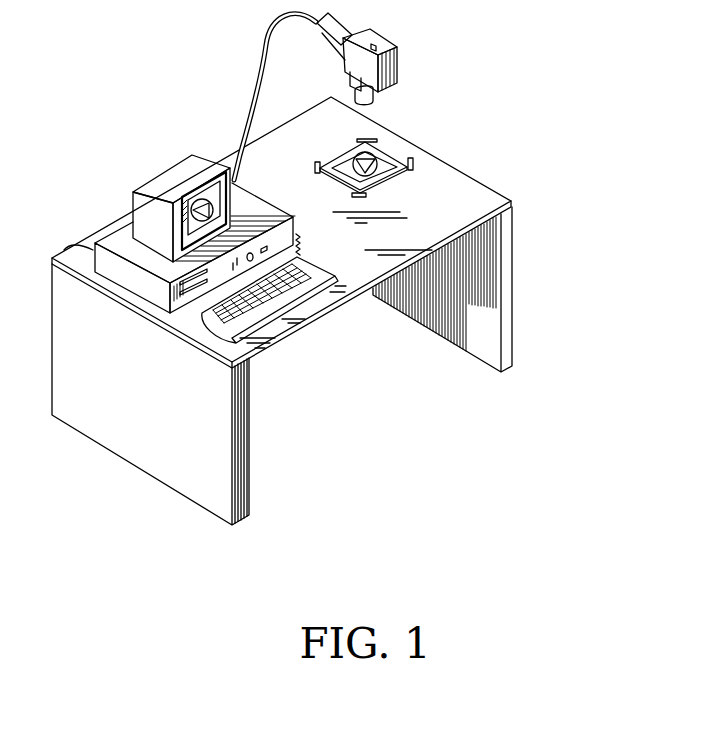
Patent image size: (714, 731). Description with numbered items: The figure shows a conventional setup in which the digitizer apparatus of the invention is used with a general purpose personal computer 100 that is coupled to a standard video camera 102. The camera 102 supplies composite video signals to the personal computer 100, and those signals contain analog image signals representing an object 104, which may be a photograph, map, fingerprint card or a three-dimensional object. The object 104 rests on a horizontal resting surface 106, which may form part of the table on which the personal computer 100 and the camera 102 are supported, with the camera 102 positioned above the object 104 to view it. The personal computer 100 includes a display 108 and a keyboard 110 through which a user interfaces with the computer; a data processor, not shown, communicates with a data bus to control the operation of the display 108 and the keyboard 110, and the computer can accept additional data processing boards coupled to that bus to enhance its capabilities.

The personal computer 100 is at (161, 80).
The video camera 102 is at (397, 60).
The object 104 is at (391, 157).
The horizontal resting surface 106 is at (483, 197).
The display 108 is at (196, 200).
The keyboard 110 is at (277, 304).